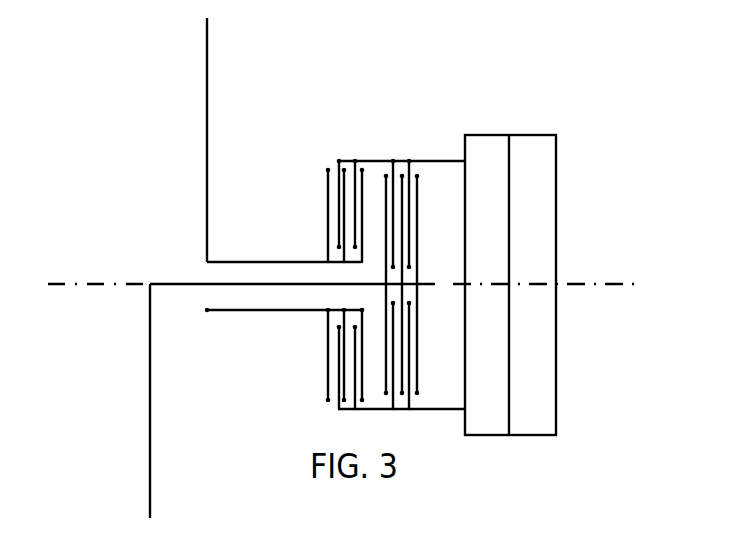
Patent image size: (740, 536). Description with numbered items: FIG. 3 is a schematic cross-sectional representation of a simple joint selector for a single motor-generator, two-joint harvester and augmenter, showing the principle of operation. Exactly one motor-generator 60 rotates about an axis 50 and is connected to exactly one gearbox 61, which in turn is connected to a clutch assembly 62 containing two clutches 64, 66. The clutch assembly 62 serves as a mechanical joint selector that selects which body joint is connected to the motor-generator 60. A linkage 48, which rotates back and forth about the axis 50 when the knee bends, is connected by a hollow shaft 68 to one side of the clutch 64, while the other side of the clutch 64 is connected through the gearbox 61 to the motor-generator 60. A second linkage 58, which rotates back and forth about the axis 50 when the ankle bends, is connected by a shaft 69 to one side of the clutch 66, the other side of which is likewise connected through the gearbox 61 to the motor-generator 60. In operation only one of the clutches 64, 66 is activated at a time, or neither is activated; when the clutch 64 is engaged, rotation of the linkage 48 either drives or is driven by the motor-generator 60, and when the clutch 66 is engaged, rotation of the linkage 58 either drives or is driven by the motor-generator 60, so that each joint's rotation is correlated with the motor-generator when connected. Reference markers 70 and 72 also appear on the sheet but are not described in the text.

The linkage 48 is at (207, 105).
The axis 50 is at (583, 283).
The linkage 58 is at (150, 422).
The motor-generator 60 is at (556, 168).
The gearbox 61 is at (483, 135).
The clutch assembly 62 is at (392, 232).
The clutch 64 is at (365, 143).
The clutch 66 is at (424, 143).
The hollow shaft 68 is at (235, 262).
The shaft 69 is at (175, 284).
The clutch pack 70 is at (677, 492).
The clutch 72 is at (703, 526).